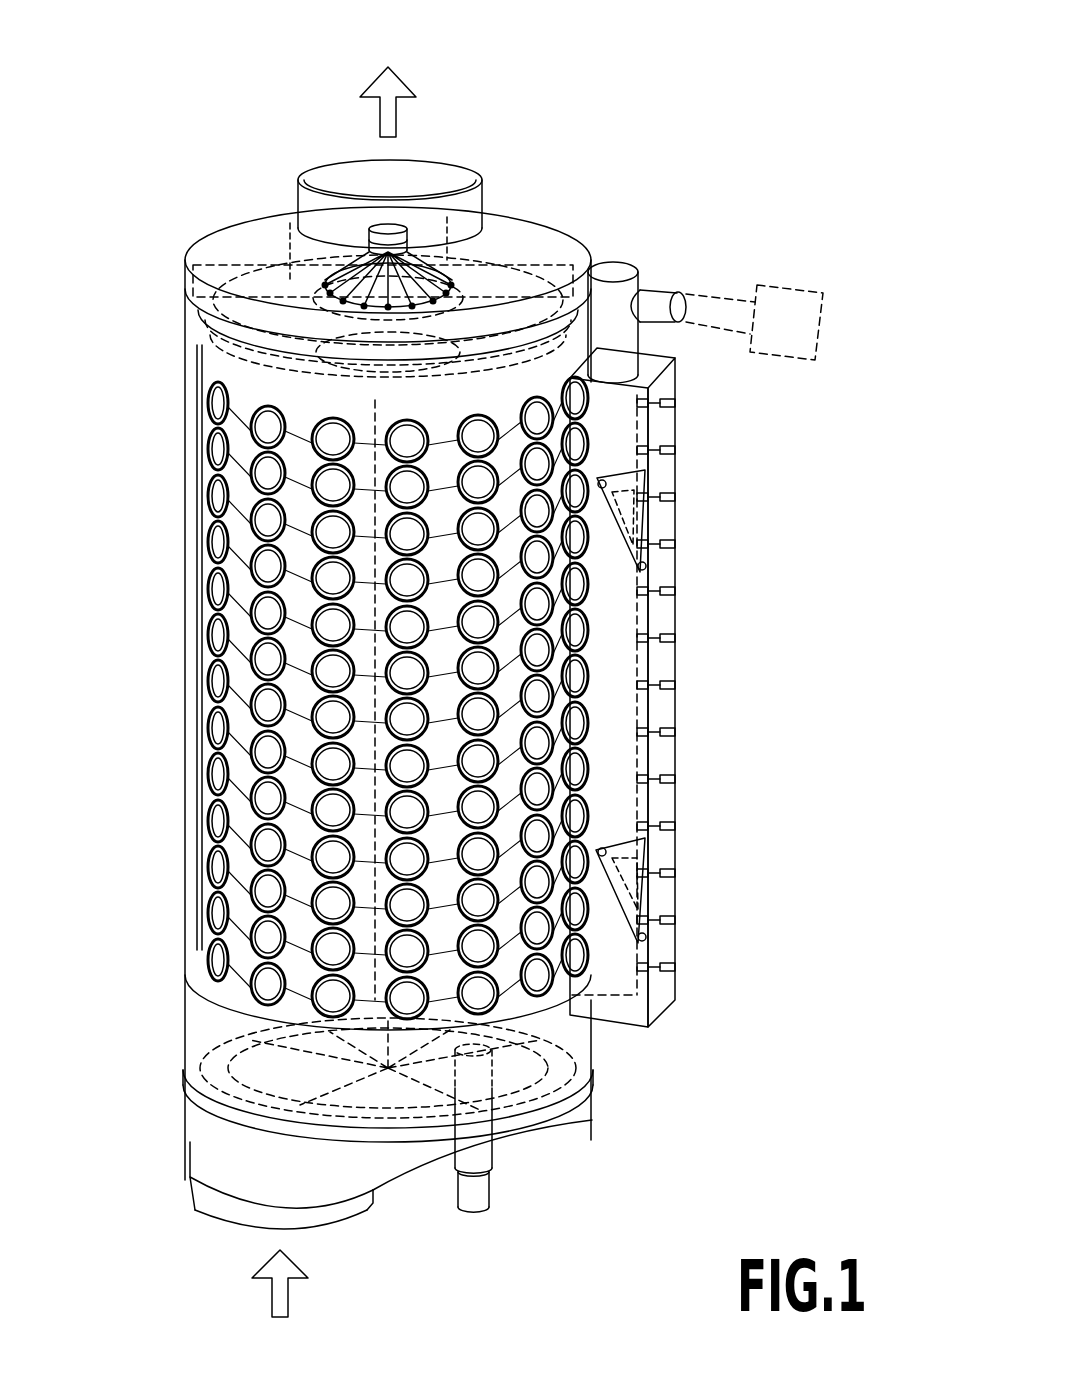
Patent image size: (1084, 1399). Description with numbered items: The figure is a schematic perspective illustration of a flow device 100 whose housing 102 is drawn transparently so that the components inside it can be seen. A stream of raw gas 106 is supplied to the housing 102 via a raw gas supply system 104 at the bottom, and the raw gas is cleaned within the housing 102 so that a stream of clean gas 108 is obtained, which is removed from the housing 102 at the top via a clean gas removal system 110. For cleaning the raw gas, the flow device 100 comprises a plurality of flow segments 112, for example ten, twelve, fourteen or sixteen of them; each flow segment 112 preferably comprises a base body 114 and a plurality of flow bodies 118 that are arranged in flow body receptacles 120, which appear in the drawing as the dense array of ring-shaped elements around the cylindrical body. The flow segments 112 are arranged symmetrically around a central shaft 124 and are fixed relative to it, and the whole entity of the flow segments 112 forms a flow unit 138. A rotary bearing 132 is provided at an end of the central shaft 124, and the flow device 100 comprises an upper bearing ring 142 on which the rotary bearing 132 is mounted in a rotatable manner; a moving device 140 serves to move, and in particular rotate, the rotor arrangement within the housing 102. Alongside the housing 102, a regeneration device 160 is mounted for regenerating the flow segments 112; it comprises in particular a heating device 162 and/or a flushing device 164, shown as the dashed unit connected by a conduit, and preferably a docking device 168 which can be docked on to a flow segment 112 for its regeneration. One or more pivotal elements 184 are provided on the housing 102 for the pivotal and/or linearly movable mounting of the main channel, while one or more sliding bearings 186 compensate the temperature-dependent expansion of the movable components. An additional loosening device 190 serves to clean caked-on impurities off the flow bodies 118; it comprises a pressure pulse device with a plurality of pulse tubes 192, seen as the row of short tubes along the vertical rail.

The flow device 100 is at (324, 135).
The housing 102 is at (185, 1015).
The raw gas supply system 104 is at (250, 1190).
The stream of raw gas 106 is at (290, 1300).
The stream of clean gas 108 is at (392, 106).
The clean gas removal system 110 is at (418, 252).
The flow segments 112 is at (340, 435).
The base body 114 is at (420, 382).
The flow bodies 118 is at (282, 625).
The flow body receptacles 120 is at (262, 765).
The central shaft 124 is at (392, 222).
The rotary bearing 132 is at (440, 232).
The flow unit 138 is at (188, 794).
The moving device 140 is at (306, 262).
The upper bearing ring 142 is at (292, 262).
The regeneration device 160 is at (700, 437).
The heating device 162 is at (810, 308).
The flushing device 164 is at (808, 337).
The docking device 168 is at (696, 987).
The pivotal elements 184 is at (637, 528).
The sliding bearings 186 is at (657, 832).
The loosening device 190 is at (695, 854).
The pulse tubes 192 is at (676, 685).